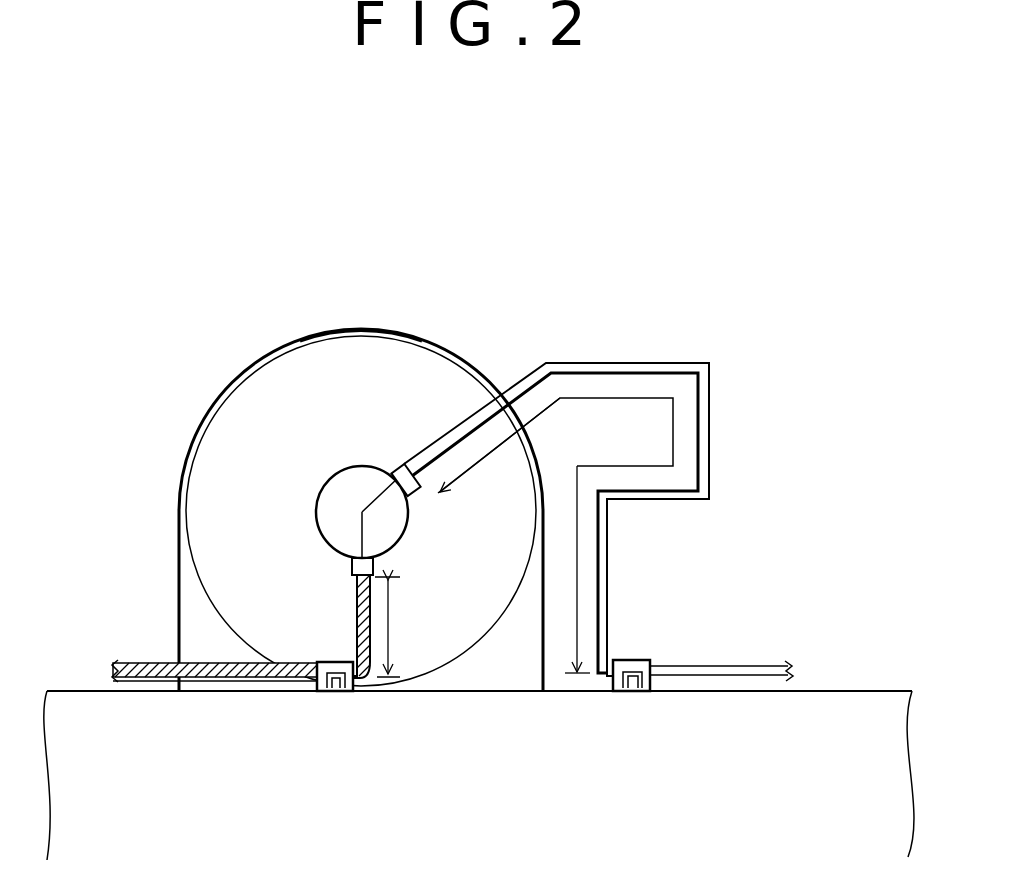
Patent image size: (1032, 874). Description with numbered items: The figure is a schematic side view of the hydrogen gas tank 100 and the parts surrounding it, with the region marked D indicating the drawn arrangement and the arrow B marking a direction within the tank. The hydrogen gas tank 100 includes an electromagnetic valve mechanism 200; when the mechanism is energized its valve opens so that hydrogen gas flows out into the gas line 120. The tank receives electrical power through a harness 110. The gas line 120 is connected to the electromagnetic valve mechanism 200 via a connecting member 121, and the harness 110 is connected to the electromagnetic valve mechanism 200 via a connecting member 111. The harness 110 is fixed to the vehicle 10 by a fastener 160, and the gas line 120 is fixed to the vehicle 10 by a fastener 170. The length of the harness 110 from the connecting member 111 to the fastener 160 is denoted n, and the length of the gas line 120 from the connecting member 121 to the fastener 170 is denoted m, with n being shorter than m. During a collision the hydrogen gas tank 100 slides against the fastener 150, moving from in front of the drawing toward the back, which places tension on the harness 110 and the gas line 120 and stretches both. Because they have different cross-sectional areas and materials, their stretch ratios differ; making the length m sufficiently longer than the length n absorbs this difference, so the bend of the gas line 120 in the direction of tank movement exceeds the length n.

The vehicle 10 is at (887, 735).
The hydrogen gas tank 100 is at (398, 338).
The harness 110 is at (357, 615).
The connecting member 111 is at (352, 562).
The gas line 120 is at (710, 428).
The connecting member 121 is at (414, 492).
The fastener 150 is at (178, 562).
The fastener 160 is at (313, 693).
The fastener 170 is at (614, 682).
The electromagnetic valve mechanism 200 is at (322, 485).
The direction B is at (424, 461).
The device D is at (515, 335).
The length of the gas line m is at (579, 569).
The length of the harness n is at (387, 627).